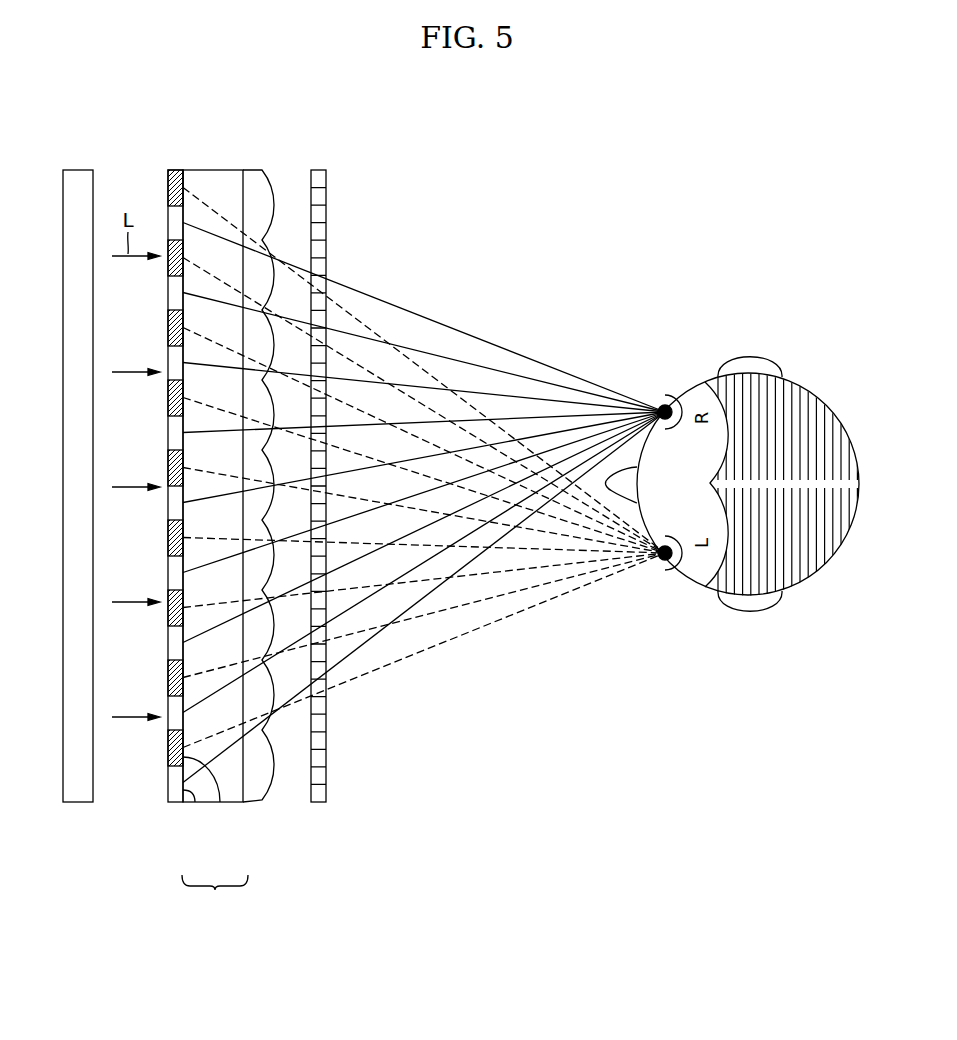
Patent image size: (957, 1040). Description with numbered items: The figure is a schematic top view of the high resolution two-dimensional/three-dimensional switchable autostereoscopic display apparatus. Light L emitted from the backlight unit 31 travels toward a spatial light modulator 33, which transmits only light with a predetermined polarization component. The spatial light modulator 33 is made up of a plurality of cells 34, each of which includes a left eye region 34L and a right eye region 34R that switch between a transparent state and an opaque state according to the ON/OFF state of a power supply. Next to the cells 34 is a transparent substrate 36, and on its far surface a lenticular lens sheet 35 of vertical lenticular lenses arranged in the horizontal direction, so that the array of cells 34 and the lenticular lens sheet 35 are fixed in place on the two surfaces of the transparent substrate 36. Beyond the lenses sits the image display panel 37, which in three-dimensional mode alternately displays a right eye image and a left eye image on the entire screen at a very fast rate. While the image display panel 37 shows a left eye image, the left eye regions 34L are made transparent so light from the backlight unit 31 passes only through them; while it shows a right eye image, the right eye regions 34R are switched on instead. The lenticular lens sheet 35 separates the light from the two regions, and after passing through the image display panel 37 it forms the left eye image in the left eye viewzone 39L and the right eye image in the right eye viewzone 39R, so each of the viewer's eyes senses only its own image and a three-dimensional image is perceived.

The backlight unit 31 is at (78, 170).
The spatial light modulator 33 is at (172, 810).
The cell 34 is at (215, 897).
The left eye region 34L is at (195, 803).
The right eye region 34R is at (220, 803).
The lenticular lens sheet 35 is at (253, 170).
The transparent substrate 36 is at (207, 170).
The image display panel 37 is at (318, 170).
The right eye viewzone 39R is at (650, 393).
The left eye viewzone 39L is at (650, 577).